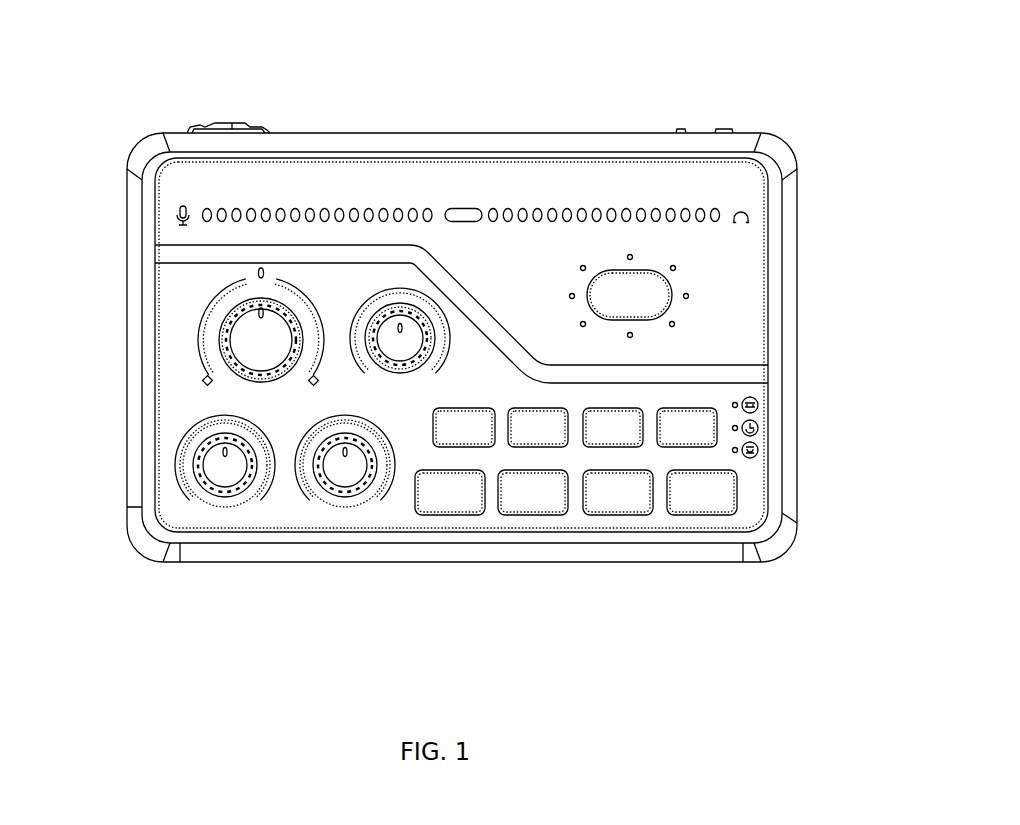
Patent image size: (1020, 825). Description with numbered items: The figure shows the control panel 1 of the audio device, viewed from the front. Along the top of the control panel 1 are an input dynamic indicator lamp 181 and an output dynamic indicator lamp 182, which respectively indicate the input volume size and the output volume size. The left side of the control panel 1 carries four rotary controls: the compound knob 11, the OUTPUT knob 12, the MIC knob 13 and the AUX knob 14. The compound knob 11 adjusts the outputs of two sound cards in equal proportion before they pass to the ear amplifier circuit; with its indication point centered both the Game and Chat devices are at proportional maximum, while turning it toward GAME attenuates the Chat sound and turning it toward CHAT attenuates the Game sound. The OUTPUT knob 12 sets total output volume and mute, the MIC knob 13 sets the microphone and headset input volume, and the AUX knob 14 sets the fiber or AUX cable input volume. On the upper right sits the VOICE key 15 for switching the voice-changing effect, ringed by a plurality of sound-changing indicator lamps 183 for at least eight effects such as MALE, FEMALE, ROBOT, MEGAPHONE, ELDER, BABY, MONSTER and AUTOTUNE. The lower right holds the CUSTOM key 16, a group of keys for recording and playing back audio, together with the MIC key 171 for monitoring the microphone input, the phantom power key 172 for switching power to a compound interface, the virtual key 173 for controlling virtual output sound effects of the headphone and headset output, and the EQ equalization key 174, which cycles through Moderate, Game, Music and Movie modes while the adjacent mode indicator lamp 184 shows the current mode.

The control panel 1 is at (745, 487).
The compound knob 11 is at (261, 347).
The OUTPUT knob 12 is at (393, 346).
The MIC knob 13 is at (232, 463).
The AUX knob 14 is at (348, 472).
The VOICE key 15 is at (652, 288).
The CUSTOM key 16 is at (677, 505).
The MIC key 171 is at (473, 437).
The phantom power key 172 is at (553, 437).
The virtual key 173 is at (628, 437).
The EQ equalization key 174 is at (692, 420).
The input dynamic indicator lamp 181 is at (310, 212).
The output dynamic indicator lamp 182 is at (610, 212).
The sound-changing indicator lamps 183 is at (678, 265).
The mode indicator lamp 184 is at (760, 450).